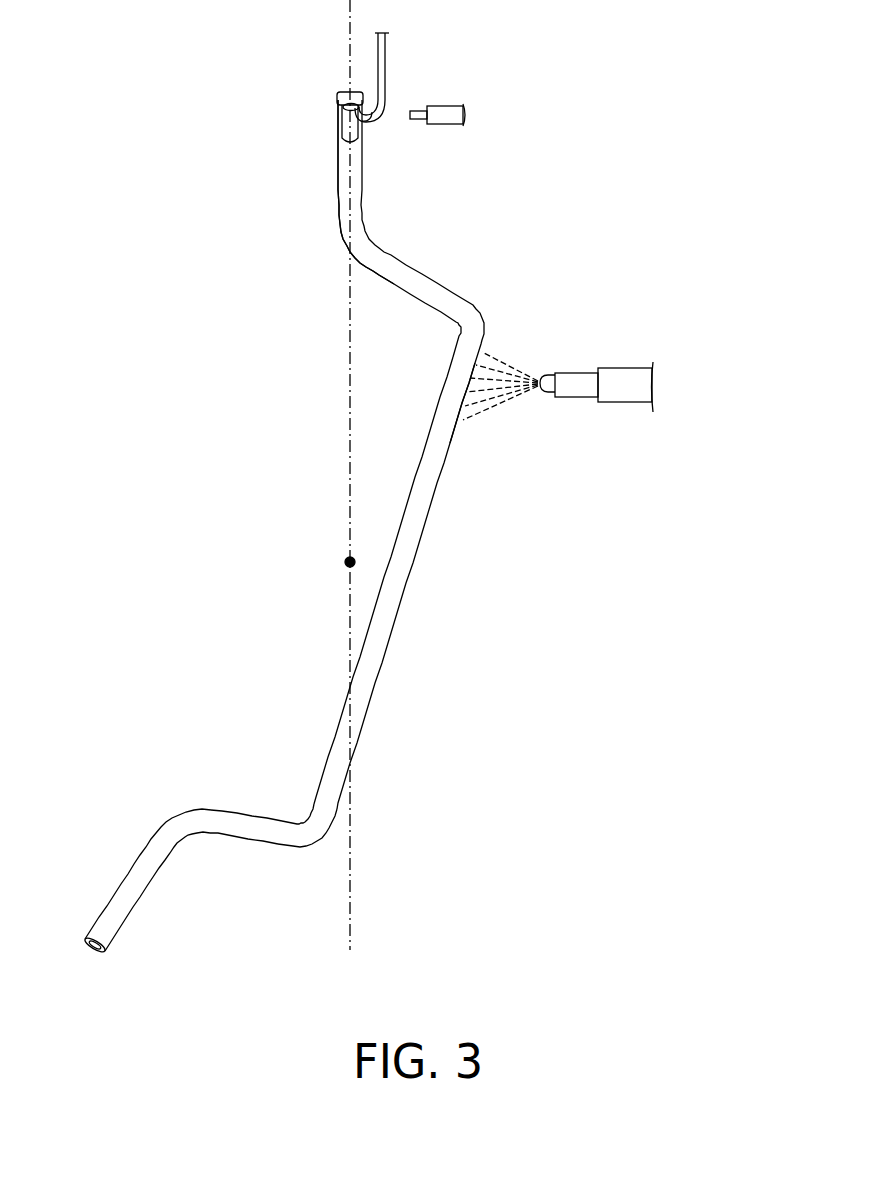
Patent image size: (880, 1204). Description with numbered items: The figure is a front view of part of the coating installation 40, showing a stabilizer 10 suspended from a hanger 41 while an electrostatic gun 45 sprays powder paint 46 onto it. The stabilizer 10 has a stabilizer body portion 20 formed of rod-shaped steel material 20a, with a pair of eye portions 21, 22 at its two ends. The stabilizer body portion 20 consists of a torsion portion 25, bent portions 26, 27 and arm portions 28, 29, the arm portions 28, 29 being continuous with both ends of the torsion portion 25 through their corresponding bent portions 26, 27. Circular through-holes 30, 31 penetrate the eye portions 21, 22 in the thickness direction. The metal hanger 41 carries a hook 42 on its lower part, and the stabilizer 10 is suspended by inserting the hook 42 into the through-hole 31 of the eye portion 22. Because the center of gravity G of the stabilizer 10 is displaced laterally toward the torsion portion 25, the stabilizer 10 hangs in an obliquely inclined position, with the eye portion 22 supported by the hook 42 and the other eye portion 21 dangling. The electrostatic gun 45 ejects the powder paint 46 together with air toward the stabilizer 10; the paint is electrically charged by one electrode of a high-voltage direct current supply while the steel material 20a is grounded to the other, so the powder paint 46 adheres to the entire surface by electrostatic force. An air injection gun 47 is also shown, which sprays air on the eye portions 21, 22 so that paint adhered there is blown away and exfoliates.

The stabilizer 10 is at (405, 690).
The stabilizer body portion 20 is at (425, 495).
The steel material 20a is at (437, 403).
The eye portion 21 is at (107, 950).
The eye portion 22 is at (338, 100).
The torsion portion 25 is at (327, 765).
The bent portion 26 is at (315, 847).
The bent portion 27 is at (478, 306).
The arm portion 28 is at (120, 877).
The arm portion 29 is at (338, 203).
The through-hole 30 is at (103, 940).
The through-hole 31 is at (345, 110).
The coating installation 40 is at (652, 150).
The hanger 41 is at (386, 50).
The hook 42 is at (368, 123).
The electrostatic gun 45 is at (582, 398).
The powder paint 46 is at (517, 393).
The air injection gun 47 is at (448, 103).
The center of gravity G is at (343, 564).